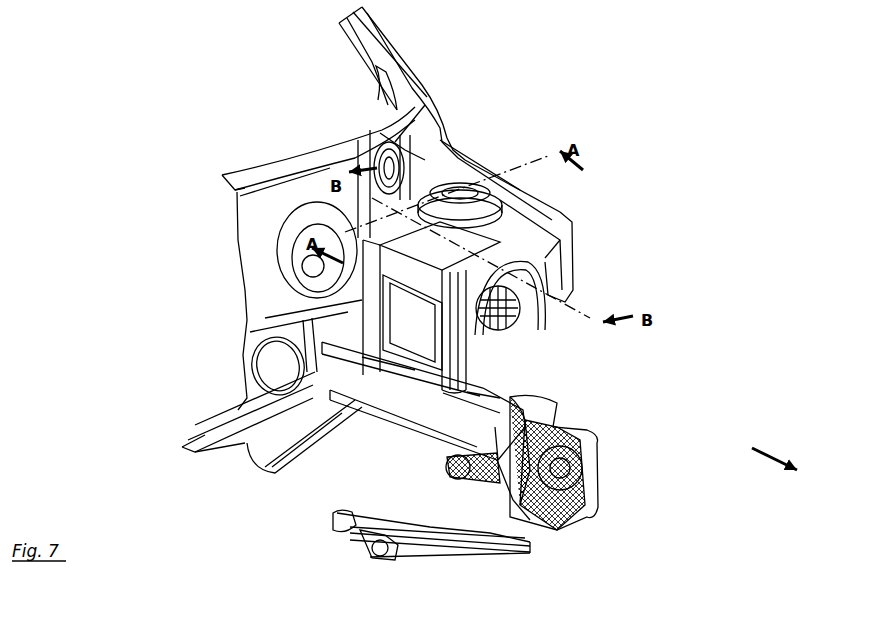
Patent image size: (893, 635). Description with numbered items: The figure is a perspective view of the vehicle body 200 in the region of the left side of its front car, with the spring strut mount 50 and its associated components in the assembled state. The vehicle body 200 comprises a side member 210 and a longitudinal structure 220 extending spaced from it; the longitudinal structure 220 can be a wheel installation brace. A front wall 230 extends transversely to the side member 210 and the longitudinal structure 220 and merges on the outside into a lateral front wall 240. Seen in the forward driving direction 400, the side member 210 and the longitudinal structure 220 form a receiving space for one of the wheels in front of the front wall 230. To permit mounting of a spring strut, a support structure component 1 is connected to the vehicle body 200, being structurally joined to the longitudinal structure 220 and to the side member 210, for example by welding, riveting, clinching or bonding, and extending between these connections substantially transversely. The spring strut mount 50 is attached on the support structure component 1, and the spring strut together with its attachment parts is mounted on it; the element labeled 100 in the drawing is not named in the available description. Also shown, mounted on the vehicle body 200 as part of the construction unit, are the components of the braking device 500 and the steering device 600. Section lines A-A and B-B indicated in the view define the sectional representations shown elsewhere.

The support structure component 1 is at (515, 237).
The spring strut mount 50 is at (480, 200).
The strut mounting bracket 100 is at (505, 290).
The vehicle body 200 is at (490, 108).
The side member 210 is at (393, 393).
The longitudinal structure 220 is at (570, 263).
The front wall 230 is at (270, 300).
The lateral front wall 240 is at (363, 57).
The forward driving direction 400 is at (773, 460).
The braking device 500 is at (600, 437).
The steering device 600 is at (493, 560).